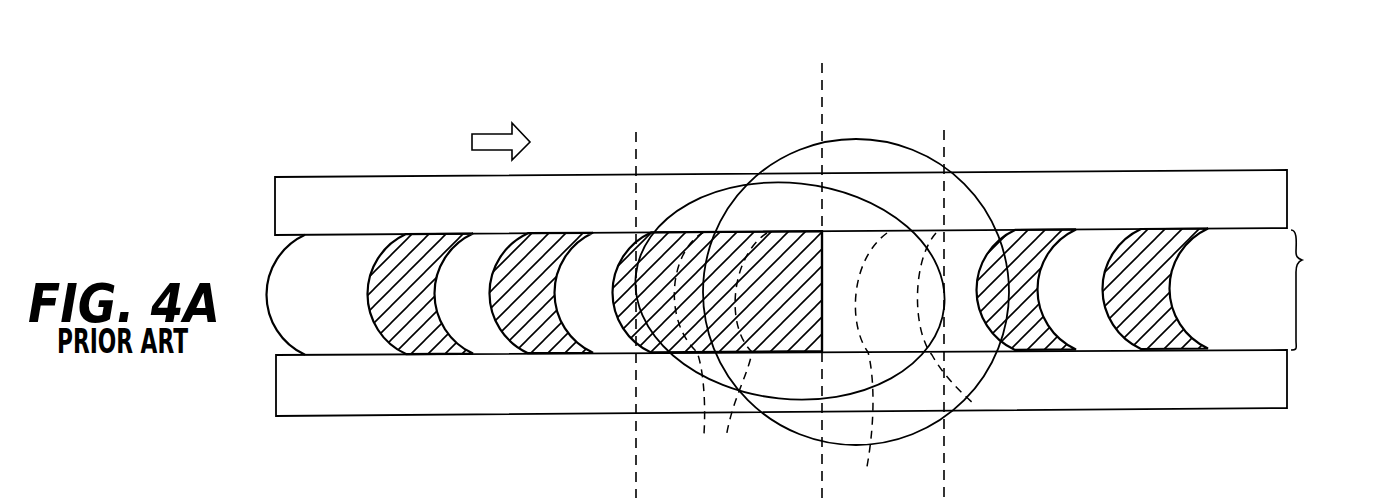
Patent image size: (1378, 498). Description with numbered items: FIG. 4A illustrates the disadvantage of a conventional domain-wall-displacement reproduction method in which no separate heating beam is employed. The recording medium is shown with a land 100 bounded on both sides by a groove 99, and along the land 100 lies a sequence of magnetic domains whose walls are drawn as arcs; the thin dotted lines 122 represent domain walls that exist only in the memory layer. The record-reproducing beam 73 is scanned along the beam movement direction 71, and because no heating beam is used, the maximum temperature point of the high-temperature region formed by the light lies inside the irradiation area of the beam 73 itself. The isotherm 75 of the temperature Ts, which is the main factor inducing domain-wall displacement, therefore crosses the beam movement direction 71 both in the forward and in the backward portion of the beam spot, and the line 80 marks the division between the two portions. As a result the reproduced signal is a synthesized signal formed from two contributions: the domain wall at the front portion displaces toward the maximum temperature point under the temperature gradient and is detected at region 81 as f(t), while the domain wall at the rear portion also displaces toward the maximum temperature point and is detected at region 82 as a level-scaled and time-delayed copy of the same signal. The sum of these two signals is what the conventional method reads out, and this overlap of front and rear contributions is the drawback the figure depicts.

The beam movement direction 71 is at (488, 133).
The record-reproducing beam 73 is at (906, 145).
The isotherm 75 is at (758, 190).
The boundary line 80 is at (822, 87).
The region 81 is at (893, 320).
The region 82 is at (783, 329).
The groove 99 is at (1257, 208).
The land 100 is at (1320, 290).
The domain wall existing only in the memory layer 122 is at (720, 420).